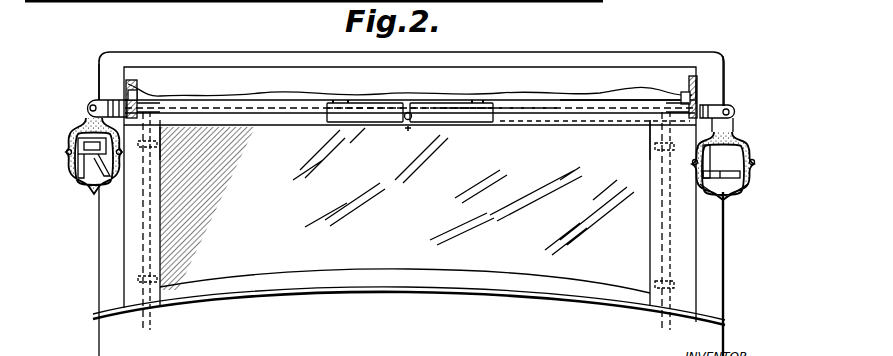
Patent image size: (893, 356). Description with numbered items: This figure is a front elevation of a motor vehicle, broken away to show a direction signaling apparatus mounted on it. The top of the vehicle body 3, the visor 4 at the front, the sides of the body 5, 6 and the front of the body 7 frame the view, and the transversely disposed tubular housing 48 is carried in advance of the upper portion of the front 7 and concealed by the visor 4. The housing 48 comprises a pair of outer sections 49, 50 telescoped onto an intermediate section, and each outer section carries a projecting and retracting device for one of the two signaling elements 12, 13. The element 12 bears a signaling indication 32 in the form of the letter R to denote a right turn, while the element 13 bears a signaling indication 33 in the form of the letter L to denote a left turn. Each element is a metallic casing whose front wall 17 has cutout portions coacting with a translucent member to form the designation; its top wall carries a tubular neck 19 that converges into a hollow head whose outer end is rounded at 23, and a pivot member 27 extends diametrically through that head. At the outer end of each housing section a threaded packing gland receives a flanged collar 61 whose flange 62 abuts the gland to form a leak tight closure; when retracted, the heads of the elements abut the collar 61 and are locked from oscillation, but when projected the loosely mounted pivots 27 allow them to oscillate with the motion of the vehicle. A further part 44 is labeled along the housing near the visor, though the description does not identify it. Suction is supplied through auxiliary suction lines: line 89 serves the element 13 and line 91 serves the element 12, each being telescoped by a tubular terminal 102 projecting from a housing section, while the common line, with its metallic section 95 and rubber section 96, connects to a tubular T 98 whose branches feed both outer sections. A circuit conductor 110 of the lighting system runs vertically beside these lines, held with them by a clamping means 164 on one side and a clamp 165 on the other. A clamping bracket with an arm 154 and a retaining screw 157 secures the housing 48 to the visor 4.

The top of the vehicle body 3 is at (593, 52).
The visor 4 is at (312, 80).
The side of the vehicle body 5 is at (97, 80).
The side of the vehicle body 6 is at (725, 82).
The front of the vehicle body 7 is at (133, 222).
The signaling element 12 is at (78, 170).
The signaling element 13 is at (738, 186).
The front wall 17 is at (709, 171).
The tubular neck 19 is at (734, 127).
The rounded outer end of the head 23 is at (86, 108).
The pivot member 27 is at (86, 102).
The signaling indication 32 is at (80, 189).
The signaling indication 33 is at (705, 163).
The curtain top edge 44 is at (668, 103).
The tubular housing 48 is at (380, 117).
The outer section of the tubular housing 49 is at (268, 103).
The outer section of the tubular housing 50 is at (592, 116).
The flanged collar 61 is at (114, 100).
The flange of the collar 62 is at (702, 103).
The auxiliary suction line 89 is at (674, 260).
The auxiliary suction line 91 is at (150, 232).
The metallic tubing section 95 is at (656, 220).
The rubber tubing section 96 is at (500, 126).
The tubular T 98 is at (408, 131).
The tubular terminal 102 is at (172, 102).
The circuit conductor 110 is at (150, 198).
The bracket arm 154 is at (140, 103).
The retaining screw 157 is at (162, 128).
The clamping means 164 is at (652, 148).
The clamp 165 is at (168, 148).